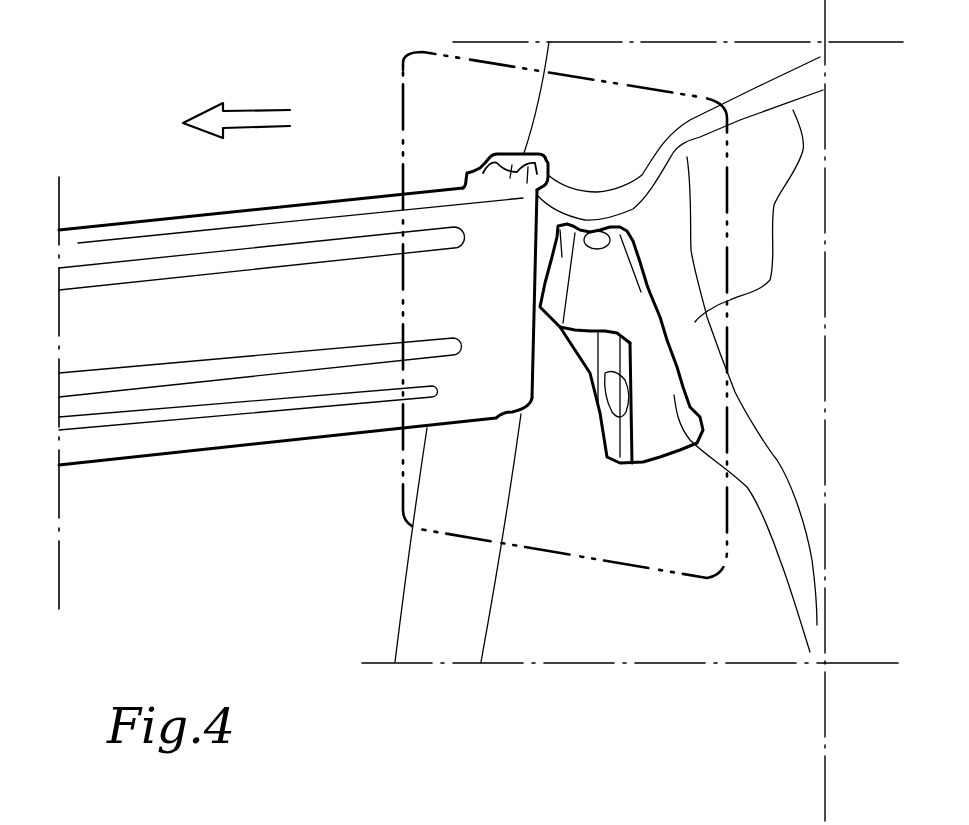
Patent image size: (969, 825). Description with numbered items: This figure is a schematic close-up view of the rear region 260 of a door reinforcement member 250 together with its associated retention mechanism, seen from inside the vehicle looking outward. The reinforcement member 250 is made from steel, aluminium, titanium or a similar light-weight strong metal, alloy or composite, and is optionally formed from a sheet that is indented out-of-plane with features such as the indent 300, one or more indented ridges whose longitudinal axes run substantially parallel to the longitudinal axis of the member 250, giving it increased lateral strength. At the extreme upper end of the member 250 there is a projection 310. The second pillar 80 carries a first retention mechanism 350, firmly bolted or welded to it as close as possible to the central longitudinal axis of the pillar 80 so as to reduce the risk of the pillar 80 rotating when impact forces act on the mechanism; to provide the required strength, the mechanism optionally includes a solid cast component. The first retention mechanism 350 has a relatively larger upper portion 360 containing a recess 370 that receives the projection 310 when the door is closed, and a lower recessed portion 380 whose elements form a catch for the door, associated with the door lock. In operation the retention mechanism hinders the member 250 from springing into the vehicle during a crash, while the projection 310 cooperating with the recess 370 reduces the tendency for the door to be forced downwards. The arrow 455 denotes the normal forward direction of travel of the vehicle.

The second pillar 80 is at (460, 560).
The reinforcement member 250 is at (262, 460).
The rear region 260 is at (588, 557).
The indent 300 is at (170, 268).
The projection 310 is at (510, 170).
The first retention mechanism 350 is at (664, 322).
The upper portion 360 is at (560, 255).
The recess 370 is at (603, 230).
The lower recessed portion 380 is at (605, 355).
The arrow 455 is at (267, 120).